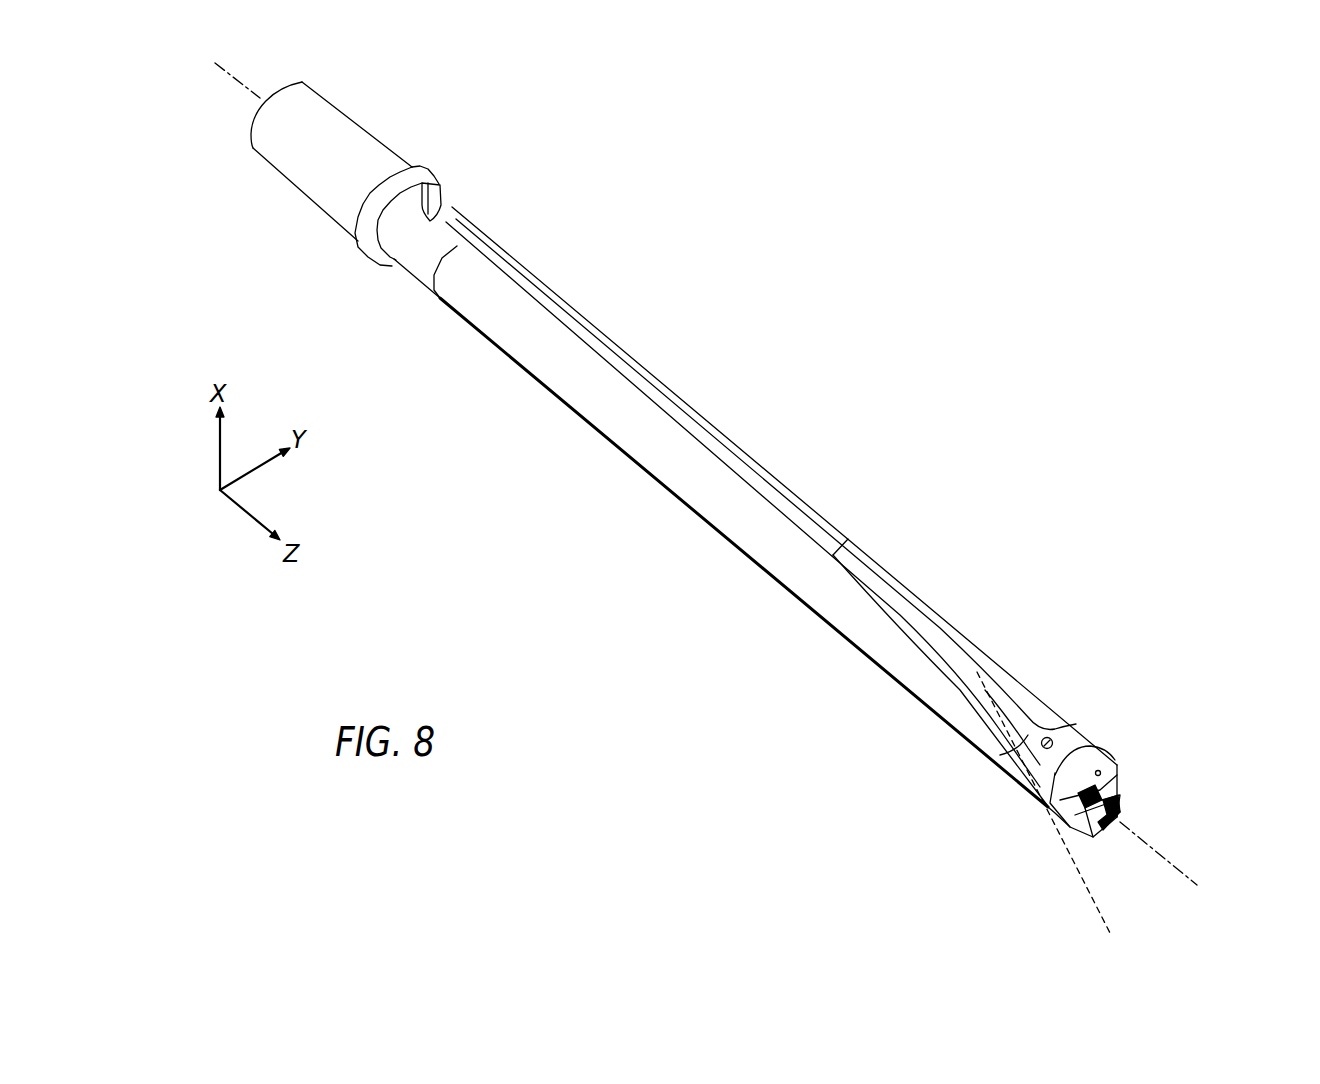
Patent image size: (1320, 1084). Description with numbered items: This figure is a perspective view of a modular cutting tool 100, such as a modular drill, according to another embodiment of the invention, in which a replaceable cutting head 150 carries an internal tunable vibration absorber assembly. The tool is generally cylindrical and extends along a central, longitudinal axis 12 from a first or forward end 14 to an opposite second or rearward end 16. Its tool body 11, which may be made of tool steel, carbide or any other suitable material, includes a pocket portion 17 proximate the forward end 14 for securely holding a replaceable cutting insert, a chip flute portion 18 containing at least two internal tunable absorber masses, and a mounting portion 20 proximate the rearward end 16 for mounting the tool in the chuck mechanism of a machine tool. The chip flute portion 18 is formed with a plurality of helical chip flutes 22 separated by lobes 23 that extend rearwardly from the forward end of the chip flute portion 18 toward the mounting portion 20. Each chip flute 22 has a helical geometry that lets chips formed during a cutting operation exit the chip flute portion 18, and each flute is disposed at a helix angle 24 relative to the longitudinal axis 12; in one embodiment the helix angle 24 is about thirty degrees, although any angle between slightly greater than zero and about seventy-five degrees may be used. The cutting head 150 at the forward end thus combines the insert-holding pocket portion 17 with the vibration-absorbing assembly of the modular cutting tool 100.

The modular cutting tool 100 is at (901, 183).
The tool body 11 is at (578, 280).
The central, longitudinal axis 12 is at (1167, 862).
The first or forward end 14 is at (1110, 835).
The second or rearward end 16 is at (237, 115).
The pocket portion 17 is at (1088, 720).
The chip flute portion 18 is at (908, 548).
The mounting portion 20 is at (385, 128).
The helical chip flutes 22 is at (955, 655).
The lobes 23 is at (792, 567).
The helix angle 24 is at (1178, 875).
The replaceable cutting head 150 is at (1115, 747).